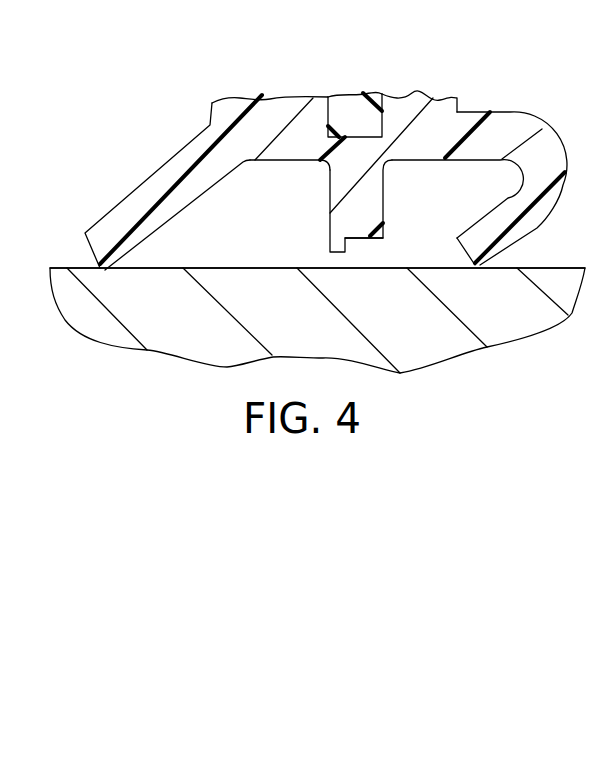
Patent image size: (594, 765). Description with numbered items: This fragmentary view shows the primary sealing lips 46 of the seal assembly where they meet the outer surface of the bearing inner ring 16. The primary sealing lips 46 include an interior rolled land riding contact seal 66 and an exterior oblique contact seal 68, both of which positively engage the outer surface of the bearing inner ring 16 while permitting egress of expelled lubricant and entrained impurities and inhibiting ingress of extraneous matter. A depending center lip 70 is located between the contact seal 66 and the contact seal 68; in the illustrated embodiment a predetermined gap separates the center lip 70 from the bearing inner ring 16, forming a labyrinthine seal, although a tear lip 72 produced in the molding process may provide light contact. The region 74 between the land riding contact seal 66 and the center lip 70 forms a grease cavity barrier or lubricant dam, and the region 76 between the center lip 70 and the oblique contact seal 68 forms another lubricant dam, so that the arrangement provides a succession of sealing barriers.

The primary sealing lips 46 is at (97, 161).
The exterior oblique contact seal 68 is at (176, 156).
The lubricant dam region 76 is at (275, 187).
The depending center lip 70 is at (330, 200).
The tear lip 72 is at (348, 246).
The grease cavity barrier region 74 is at (453, 187).
The interior rolled land riding contact seal 66 is at (565, 160).
The bearing inner ring 16 is at (60, 270).